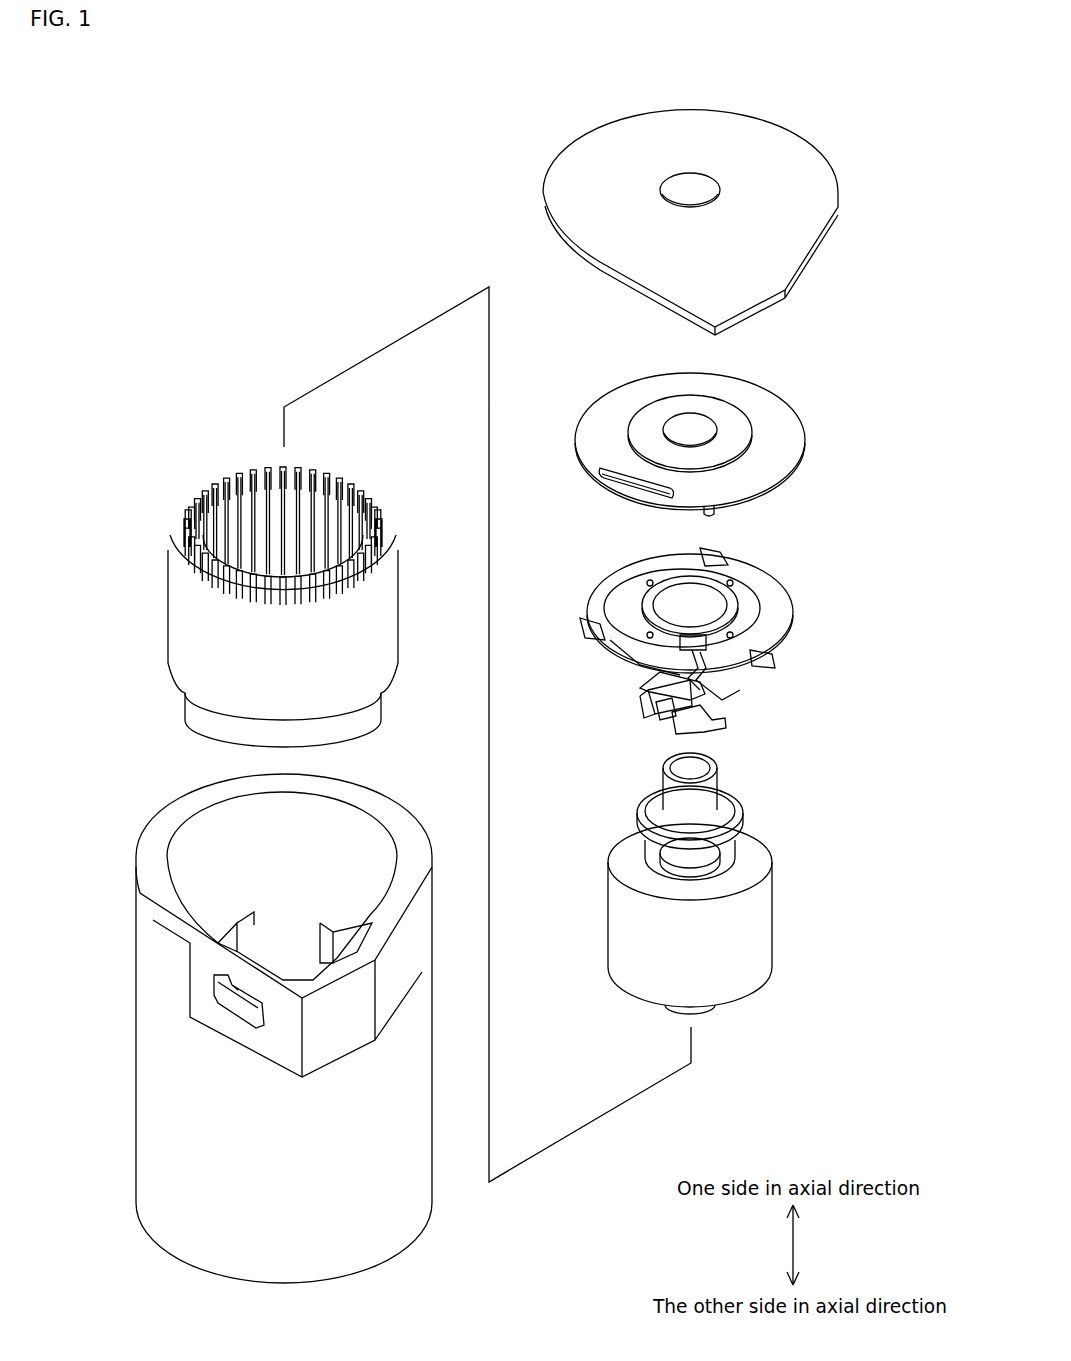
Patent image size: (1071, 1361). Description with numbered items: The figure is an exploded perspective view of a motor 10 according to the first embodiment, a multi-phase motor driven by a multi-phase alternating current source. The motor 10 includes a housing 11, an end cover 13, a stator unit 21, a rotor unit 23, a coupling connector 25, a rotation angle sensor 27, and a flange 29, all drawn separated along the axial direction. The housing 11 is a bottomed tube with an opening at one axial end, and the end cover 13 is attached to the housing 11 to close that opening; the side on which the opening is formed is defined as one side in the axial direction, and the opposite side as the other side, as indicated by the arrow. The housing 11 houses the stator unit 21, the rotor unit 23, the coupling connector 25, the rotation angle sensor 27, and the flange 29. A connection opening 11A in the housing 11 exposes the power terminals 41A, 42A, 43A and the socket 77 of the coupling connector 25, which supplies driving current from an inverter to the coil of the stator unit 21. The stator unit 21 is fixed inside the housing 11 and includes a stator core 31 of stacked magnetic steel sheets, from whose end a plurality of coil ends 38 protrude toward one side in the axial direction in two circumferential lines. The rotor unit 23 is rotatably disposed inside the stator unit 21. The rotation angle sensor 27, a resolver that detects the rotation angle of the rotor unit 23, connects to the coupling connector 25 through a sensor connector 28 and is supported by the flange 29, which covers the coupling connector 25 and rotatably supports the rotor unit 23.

The motor 10 is at (266, 150).
The housing 11 is at (248, 1028).
The connection opening 11A is at (225, 990).
The end cover 13 is at (740, 138).
The stator unit 21 is at (277, 574).
The rotor unit 23 is at (755, 935).
The coupling connector 25 is at (700, 661).
The rotation angle sensor 27 is at (740, 595).
The sensor connector 28 is at (745, 655).
The flange 29 is at (765, 410).
The stator core 31 is at (380, 625).
The coil ends 38 is at (246, 480).
The power terminal 41A is at (640, 700).
The power terminal 42A is at (660, 715).
The power terminal 43A is at (676, 730).
The socket 77 is at (640, 690).